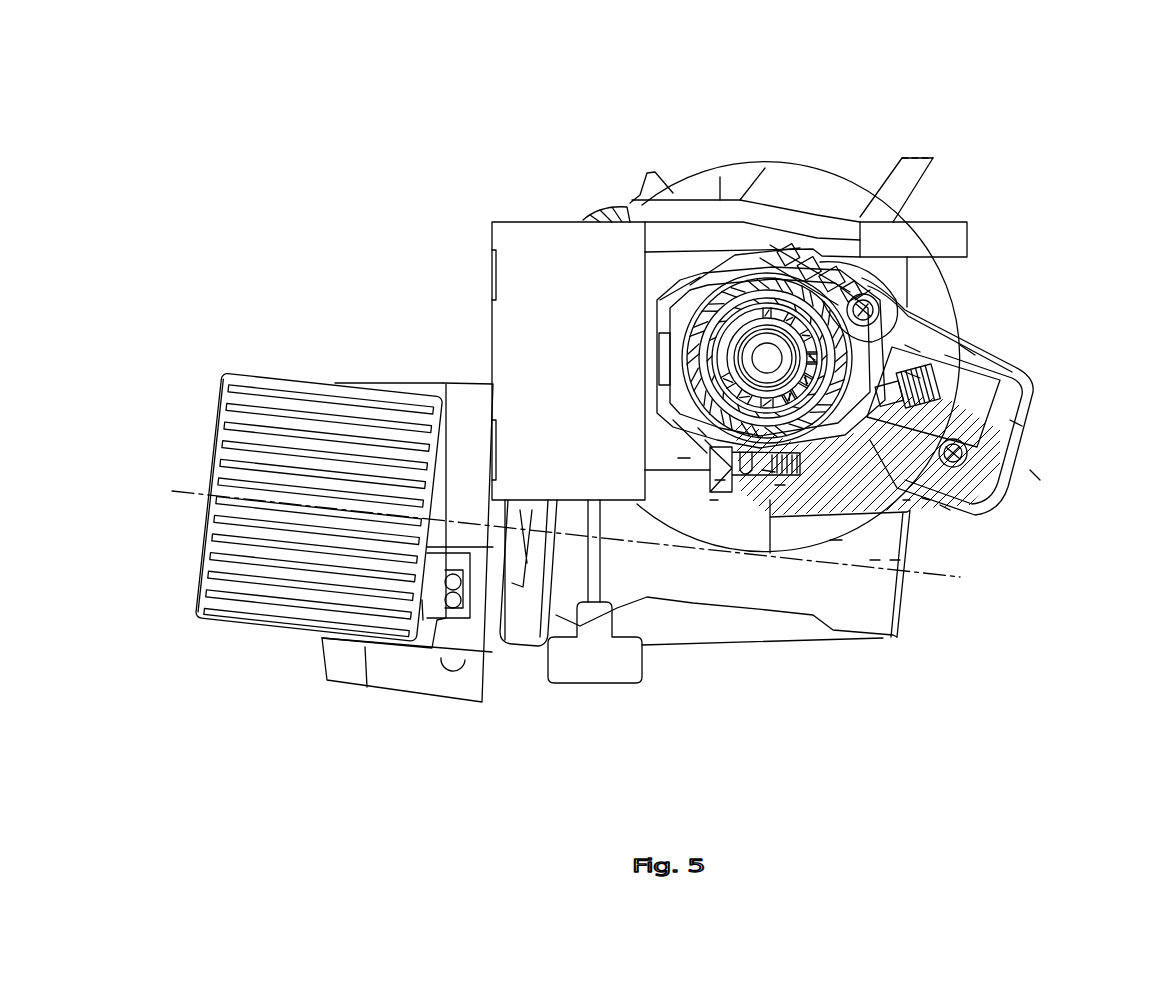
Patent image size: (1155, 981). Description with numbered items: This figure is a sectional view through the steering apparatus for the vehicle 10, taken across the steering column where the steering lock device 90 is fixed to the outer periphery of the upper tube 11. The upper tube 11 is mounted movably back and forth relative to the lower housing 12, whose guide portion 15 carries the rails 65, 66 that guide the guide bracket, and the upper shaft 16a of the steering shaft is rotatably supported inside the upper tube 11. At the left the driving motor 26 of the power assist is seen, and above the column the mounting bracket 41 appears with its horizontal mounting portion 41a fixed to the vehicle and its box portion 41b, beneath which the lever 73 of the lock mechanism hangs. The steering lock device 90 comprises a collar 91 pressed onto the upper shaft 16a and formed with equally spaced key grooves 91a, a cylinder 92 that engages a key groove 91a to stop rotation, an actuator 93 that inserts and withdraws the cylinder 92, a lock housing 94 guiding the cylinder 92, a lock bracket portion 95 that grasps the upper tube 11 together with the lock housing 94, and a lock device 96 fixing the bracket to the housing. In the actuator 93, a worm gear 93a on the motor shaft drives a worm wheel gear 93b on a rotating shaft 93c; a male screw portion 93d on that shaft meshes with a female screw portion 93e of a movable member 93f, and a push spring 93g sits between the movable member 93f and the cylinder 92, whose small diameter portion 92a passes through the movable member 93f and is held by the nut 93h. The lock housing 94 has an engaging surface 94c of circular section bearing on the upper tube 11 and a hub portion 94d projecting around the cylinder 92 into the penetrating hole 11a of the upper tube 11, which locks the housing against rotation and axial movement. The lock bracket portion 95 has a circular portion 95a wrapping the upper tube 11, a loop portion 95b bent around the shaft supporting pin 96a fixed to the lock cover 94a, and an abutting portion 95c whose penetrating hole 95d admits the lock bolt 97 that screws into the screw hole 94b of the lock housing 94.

The steering apparatus for the vehicle 10 is at (850, 158).
The upper tube 11 is at (875, 560).
The penetrating hole 11a is at (802, 270).
The lower housing 12 is at (793, 165).
The guide portion 15 is at (676, 250).
The upper shaft 16a is at (835, 540).
The driving motor 26 is at (248, 608).
The mounting bracket 41 is at (966, 208).
The mounting portion 41a is at (934, 233).
The box portion 41b is at (508, 225).
The rail 65 is at (688, 225).
The rail 66 is at (683, 455).
The lever 73 is at (583, 672).
The steering lock device 90 is at (1048, 358).
The collar 91 is at (757, 275).
The key groove 91a is at (750, 448).
The cylinder 92 is at (905, 500).
The small diameter portion 92a is at (925, 500).
The actuator 93 is at (1018, 362).
The worm gear 93a is at (965, 515).
The worm wheel gear 93b is at (1022, 388).
The rotating shaft 93c is at (1025, 425).
The male screw portion 93d is at (962, 345).
The female screw portion 93e is at (890, 360).
The movable member 93f is at (905, 372).
The push spring 93g is at (905, 345).
The nut 93h is at (945, 505).
The lock housing 94 is at (985, 495).
The lock cover 94a is at (1040, 475).
The screw hole 94b is at (778, 485).
The engaging surface 94c is at (776, 300).
The hub portion 94d is at (895, 560).
The lock bracket portion 95 is at (681, 336).
The circular portion 95a is at (697, 392).
The loop portion 95b is at (856, 300).
The abutting portion 95c is at (720, 483).
The penetrating hole 95d is at (715, 503).
The lock device 96 is at (728, 505).
The shaft supporting pin 96a is at (820, 275).
The lock bolt 97 is at (768, 470).